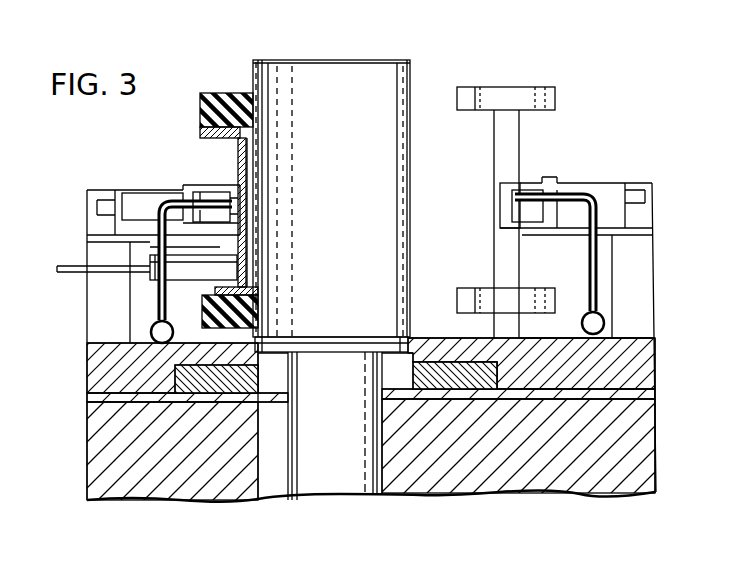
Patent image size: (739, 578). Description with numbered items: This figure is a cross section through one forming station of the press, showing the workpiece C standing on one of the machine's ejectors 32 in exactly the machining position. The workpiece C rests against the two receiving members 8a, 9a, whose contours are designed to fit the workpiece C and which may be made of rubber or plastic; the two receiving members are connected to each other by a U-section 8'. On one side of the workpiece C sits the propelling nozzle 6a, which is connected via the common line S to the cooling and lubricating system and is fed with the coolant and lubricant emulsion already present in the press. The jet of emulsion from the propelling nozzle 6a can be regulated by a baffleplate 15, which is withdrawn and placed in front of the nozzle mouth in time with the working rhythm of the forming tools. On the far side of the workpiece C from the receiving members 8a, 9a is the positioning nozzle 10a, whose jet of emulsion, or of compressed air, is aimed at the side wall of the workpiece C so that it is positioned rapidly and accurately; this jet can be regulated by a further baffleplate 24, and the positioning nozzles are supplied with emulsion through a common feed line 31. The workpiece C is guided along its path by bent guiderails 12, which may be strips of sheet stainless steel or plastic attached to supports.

The workpiece C is at (394, 68).
The receiving member 8a is at (224, 92).
The propelling nozzle 6a is at (180, 195).
The baffleplate 15 is at (232, 200).
The U-section 8' is at (274, 212).
The guiderail 12 is at (500, 86).
The baffleplate 24 is at (500, 190).
The positioning nozzle 10a is at (566, 190).
The common line S is at (150, 343).
The receiving member 9a is at (226, 350).
The ejector 32 is at (372, 424).
The common feed line 31 is at (371, 420).